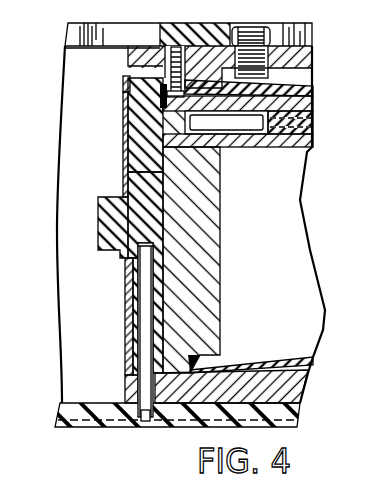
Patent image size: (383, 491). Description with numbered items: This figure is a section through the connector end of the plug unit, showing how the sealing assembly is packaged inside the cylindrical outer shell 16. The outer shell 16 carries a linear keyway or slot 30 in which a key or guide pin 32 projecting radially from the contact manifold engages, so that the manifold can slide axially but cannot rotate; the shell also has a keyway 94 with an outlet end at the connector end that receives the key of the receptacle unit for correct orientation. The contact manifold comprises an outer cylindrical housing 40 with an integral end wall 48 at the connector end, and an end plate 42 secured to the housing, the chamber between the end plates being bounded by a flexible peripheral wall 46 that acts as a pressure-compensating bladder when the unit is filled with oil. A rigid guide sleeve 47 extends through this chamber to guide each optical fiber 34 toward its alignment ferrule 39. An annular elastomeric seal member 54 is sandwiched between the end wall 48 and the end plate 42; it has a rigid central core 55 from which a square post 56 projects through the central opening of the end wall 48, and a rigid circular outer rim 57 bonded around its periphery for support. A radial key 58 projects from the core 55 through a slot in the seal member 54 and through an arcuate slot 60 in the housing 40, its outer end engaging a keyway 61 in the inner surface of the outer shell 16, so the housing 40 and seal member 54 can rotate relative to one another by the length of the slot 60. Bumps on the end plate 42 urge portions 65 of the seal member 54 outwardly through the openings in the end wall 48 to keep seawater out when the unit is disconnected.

The outer shell 16 is at (293, 412).
The linear keyway or slot 30 is at (297, 33).
The key or guide pin 32 is at (286, 52).
The optical fiber 34 is at (314, 123).
The alignment ferrule 39 is at (232, 122).
The outer cylindrical casing or housing 40 is at (287, 391).
The end plate 42 is at (207, 258).
The flexible peripheral wall 46 is at (314, 89).
The rigid guide sleeve 47 is at (290, 141).
The end wall 48 is at (127, 270).
The annular seal member 54 is at (137, 300).
The central core 55 is at (147, 218).
The pin or post 56 is at (98, 219).
The circular outer rim 57 is at (126, 84).
The radial key 58 is at (147, 332).
The arcuate slot 60 is at (133, 387).
The keyway 61 is at (148, 425).
The outwardly projecting bump or portion 65 is at (126, 127).
The keyway 94 is at (70, 44).